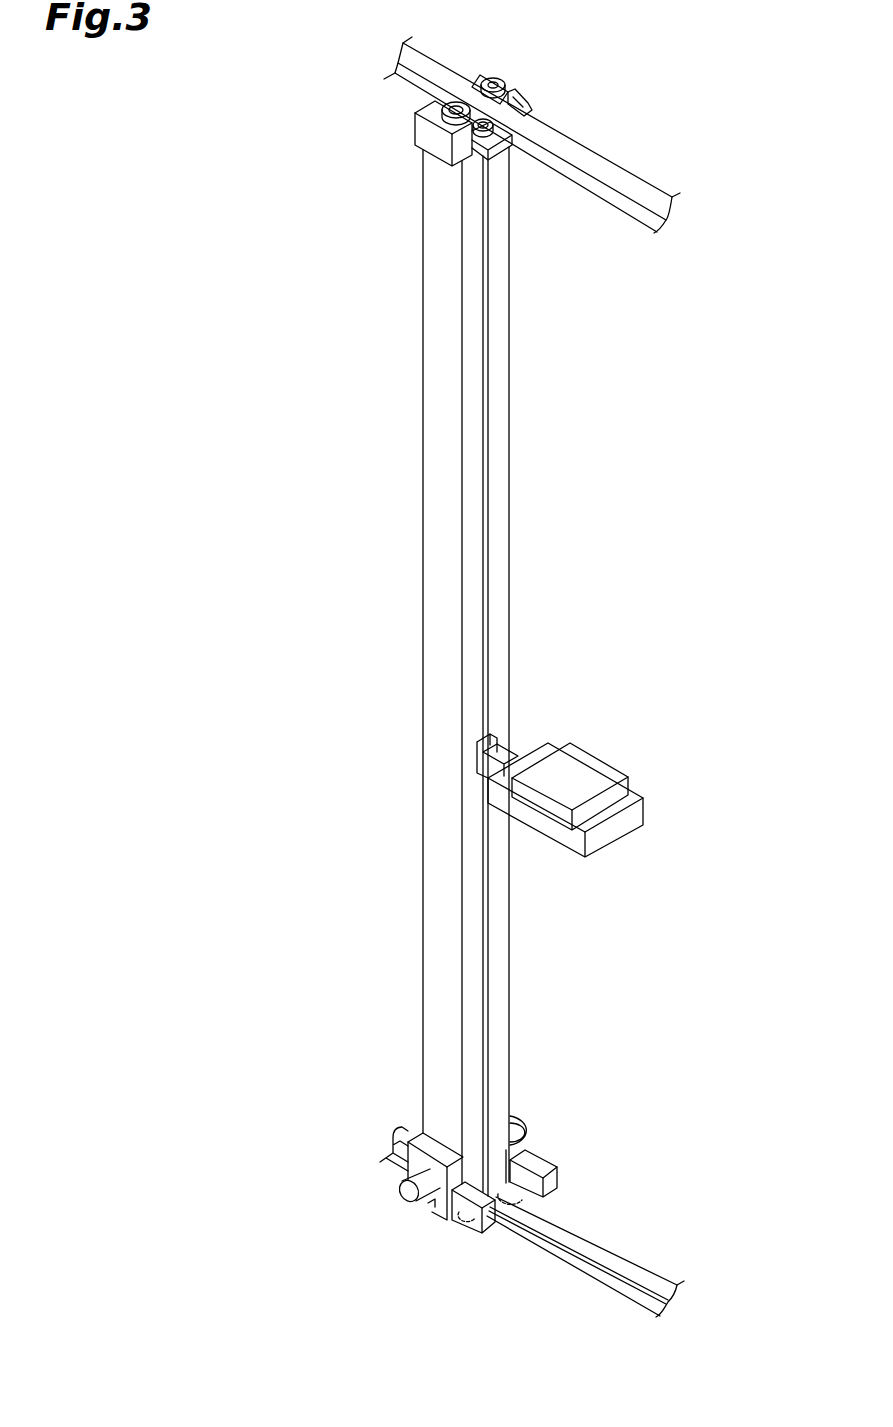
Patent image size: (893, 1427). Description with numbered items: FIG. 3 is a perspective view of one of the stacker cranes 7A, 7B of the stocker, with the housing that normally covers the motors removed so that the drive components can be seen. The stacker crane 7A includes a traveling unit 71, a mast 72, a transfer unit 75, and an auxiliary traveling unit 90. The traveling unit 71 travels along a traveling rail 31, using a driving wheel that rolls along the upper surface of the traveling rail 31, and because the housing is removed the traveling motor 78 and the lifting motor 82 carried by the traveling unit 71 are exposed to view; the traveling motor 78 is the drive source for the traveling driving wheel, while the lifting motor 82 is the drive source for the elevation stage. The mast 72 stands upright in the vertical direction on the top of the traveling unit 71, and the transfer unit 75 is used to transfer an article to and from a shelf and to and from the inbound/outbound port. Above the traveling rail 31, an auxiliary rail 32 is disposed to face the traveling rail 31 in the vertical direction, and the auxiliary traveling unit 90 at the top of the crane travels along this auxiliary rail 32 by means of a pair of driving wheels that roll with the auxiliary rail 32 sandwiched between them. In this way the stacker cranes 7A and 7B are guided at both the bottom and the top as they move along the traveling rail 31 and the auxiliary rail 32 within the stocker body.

The auxiliary traveling unit 90 is at (403, 132).
The auxiliary rail 32 is at (625, 207).
The stacker crane 7A is at (418, 671).
The stacker crane 7B is at (526, 671).
The mast 72 is at (510, 572).
The transfer unit 75 is at (607, 748).
The lifting motor 82 is at (533, 1123).
The traveling unit 71 is at (473, 1142).
The traveling motor 78 is at (403, 1200).
The traveling rail 31 is at (623, 1267).